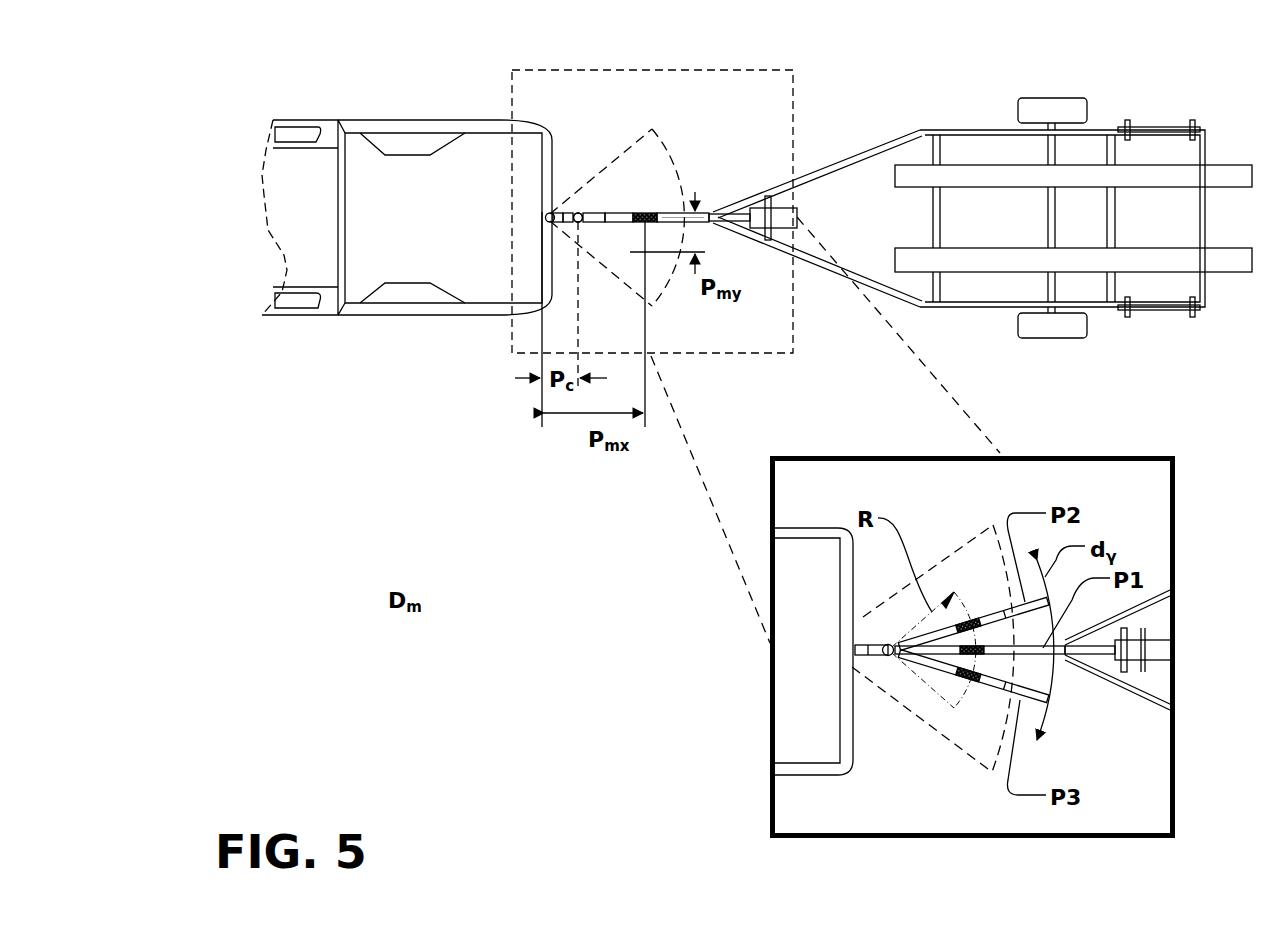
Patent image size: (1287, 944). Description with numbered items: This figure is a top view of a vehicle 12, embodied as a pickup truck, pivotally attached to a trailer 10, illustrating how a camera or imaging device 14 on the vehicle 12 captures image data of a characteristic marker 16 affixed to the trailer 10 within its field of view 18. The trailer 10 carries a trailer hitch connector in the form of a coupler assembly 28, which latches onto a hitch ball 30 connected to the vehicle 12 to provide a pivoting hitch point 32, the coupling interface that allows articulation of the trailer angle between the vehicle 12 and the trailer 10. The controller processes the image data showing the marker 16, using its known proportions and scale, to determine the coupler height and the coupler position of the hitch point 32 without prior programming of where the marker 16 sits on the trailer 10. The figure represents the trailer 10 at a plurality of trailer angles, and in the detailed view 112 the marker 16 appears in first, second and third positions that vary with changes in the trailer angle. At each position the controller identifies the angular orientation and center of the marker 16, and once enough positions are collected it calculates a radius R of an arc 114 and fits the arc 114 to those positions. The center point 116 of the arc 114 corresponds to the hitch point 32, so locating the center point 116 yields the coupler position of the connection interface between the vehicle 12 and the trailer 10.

The trailer 10 is at (1102, 128).
The vehicle 12 is at (393, 125).
The imaging device 14 is at (548, 213).
The characteristic marker 16 is at (640, 212).
The field of view 18 is at (678, 172).
The coupler assembly 28 is at (640, 160).
The hitch ball 30 is at (578, 213).
The hitch point 32 is at (578, 217).
The detailed view 112 is at (1116, 479).
The arc 114 is at (957, 691).
The center point 116 is at (875, 645).